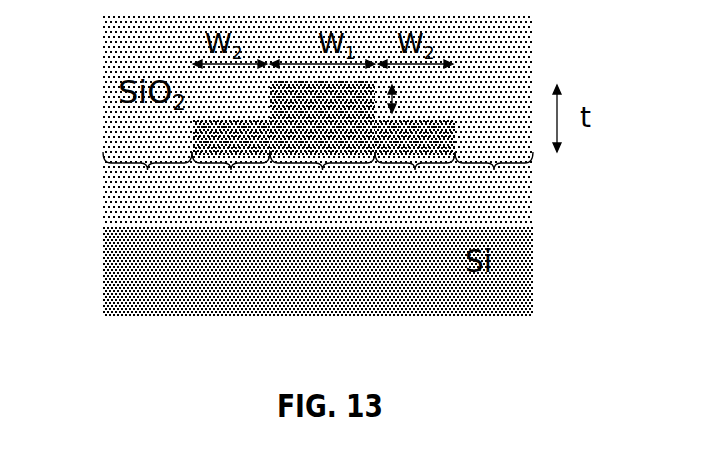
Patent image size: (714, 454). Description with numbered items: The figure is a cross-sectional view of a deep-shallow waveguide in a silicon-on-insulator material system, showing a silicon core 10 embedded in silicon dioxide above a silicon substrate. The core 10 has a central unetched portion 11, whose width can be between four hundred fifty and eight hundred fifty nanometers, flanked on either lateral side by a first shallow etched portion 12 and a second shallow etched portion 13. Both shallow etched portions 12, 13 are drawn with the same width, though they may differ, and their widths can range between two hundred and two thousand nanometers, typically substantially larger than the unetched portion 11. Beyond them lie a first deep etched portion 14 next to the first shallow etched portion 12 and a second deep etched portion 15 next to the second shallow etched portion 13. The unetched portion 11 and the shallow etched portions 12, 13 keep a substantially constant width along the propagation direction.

The core 10 is at (233, 128).
The unetched portion 11 is at (322, 180).
The first shallow etched portion 12 is at (231, 180).
The second shallow etched portion 13 is at (415, 180).
The first deep etched portion 14 is at (147, 180).
The second deep etched portion 15 is at (494, 180).